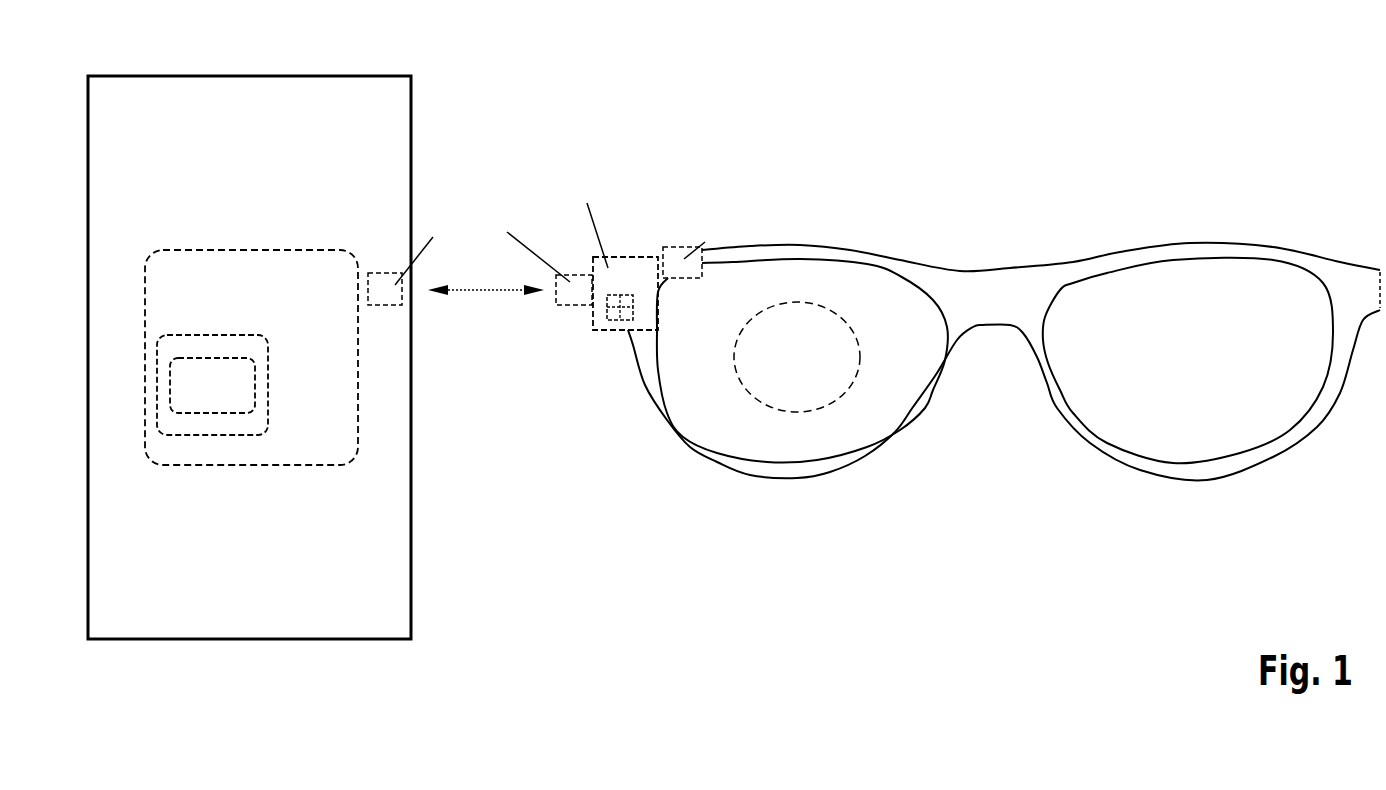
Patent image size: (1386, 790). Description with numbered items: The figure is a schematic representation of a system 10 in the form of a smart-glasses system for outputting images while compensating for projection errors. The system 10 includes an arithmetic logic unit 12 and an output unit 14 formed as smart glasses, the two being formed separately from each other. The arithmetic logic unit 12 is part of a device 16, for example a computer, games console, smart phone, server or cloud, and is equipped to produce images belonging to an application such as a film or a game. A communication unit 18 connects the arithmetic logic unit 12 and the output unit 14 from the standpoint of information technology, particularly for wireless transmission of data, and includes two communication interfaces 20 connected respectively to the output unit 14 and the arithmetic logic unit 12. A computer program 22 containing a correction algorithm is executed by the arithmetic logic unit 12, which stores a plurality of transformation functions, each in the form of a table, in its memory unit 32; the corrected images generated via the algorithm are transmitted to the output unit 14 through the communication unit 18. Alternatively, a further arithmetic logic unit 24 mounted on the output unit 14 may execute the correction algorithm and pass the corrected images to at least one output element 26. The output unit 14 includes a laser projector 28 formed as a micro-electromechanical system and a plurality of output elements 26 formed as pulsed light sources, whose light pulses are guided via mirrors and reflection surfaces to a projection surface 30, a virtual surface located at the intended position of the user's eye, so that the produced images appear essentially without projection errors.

The system 10 is at (1218, 110).
The arithmetic logic unit 12 is at (298, 238).
The output unit 14 is at (1300, 212).
The device 16 is at (430, 97).
The communication unit 18 is at (672, 168).
The communication interfaces 20 is at (388, 272).
The computer program 22 is at (223, 357).
The further arithmetic logic unit 24 is at (689, 246).
The output element 26 is at (628, 331).
The laser projector 28 is at (636, 257).
The projection surface 30 is at (828, 302).
The memory unit 32 is at (190, 334).